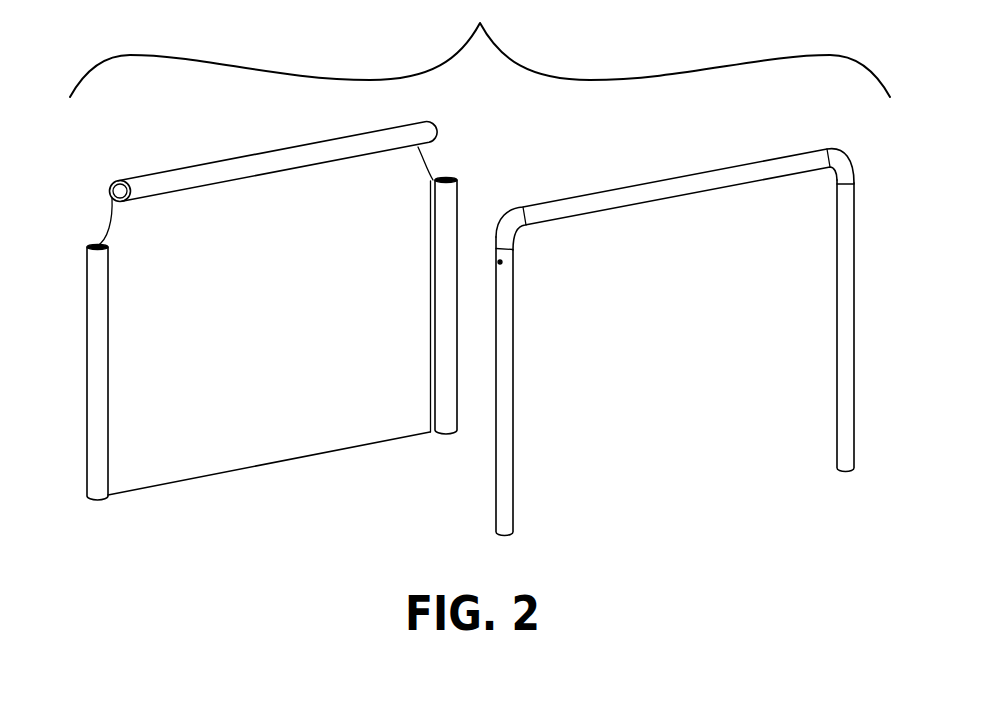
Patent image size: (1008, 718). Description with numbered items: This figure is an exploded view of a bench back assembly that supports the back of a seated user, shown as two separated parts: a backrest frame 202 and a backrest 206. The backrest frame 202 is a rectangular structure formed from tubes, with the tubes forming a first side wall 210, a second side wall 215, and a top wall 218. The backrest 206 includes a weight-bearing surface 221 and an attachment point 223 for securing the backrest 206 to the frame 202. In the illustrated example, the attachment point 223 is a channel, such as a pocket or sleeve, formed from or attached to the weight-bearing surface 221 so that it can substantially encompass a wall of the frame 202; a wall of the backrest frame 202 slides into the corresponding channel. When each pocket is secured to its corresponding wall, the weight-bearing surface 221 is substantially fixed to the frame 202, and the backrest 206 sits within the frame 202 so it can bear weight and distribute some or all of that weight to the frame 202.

The backrest frame 202 is at (701, 325).
The backrest 206 is at (246, 316).
The first side wall 210 is at (510, 383).
The second side wall 215 is at (850, 333).
The top wall 218 is at (700, 180).
The weight-bearing surface 221 is at (290, 435).
The attachment point 223 is at (247, 163).